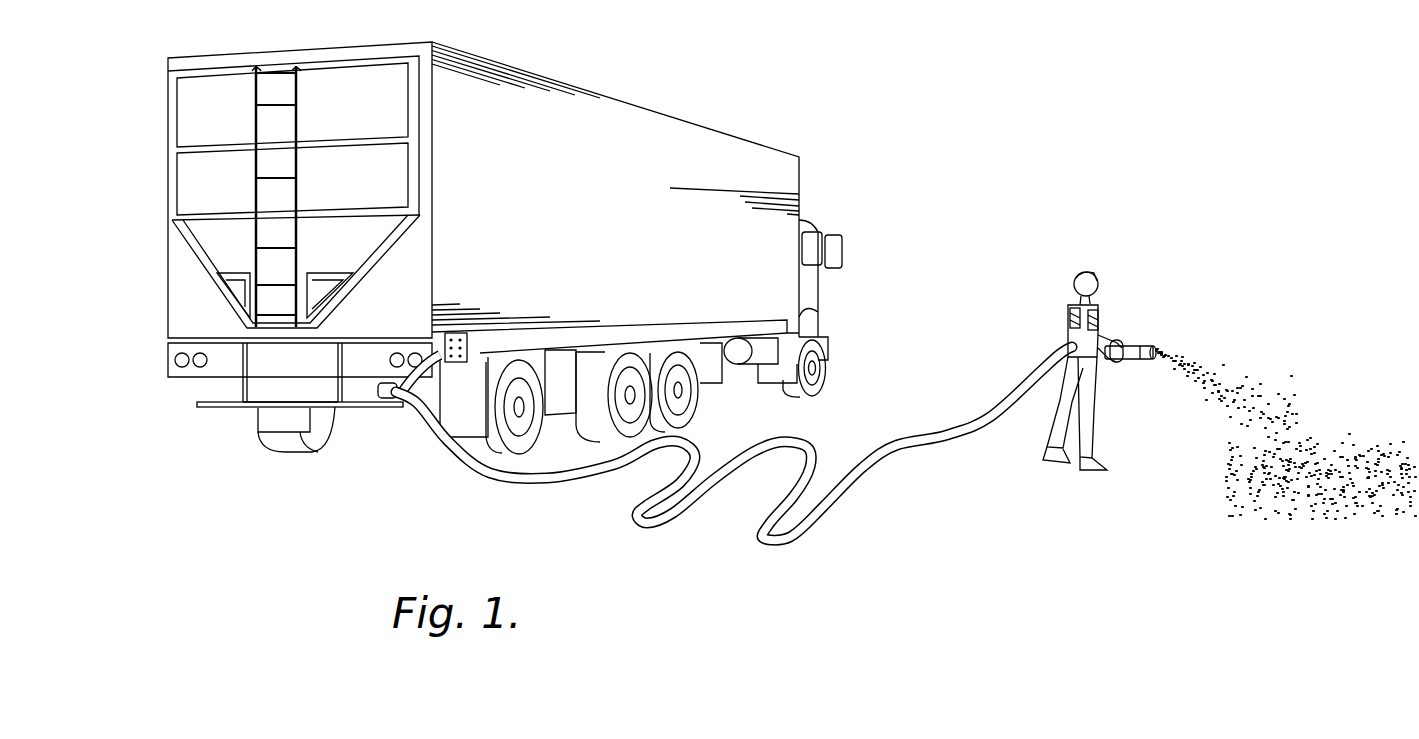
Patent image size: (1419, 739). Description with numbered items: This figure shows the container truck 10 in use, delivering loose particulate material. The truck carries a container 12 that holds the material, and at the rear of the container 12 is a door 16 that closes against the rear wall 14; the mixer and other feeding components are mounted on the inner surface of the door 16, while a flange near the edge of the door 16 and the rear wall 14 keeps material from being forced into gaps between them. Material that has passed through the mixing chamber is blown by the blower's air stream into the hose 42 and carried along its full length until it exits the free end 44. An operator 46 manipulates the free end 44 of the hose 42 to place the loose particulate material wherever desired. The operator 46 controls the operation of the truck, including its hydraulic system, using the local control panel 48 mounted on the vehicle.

The insulation dispensing vehicle system 10 is at (497, 273).
The container 12 is at (649, 140).
The rear wall 14 is at (183, 307).
The door 16 is at (189, 180).
The hose 42 is at (804, 442).
The free end 44 is at (1138, 343).
The operator 46 is at (1070, 310).
The local control panel 48 is at (398, 400).